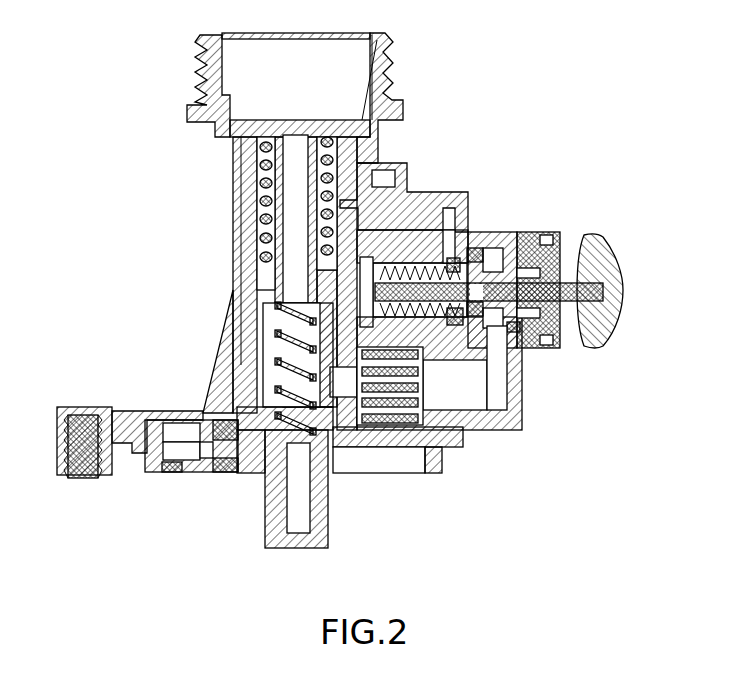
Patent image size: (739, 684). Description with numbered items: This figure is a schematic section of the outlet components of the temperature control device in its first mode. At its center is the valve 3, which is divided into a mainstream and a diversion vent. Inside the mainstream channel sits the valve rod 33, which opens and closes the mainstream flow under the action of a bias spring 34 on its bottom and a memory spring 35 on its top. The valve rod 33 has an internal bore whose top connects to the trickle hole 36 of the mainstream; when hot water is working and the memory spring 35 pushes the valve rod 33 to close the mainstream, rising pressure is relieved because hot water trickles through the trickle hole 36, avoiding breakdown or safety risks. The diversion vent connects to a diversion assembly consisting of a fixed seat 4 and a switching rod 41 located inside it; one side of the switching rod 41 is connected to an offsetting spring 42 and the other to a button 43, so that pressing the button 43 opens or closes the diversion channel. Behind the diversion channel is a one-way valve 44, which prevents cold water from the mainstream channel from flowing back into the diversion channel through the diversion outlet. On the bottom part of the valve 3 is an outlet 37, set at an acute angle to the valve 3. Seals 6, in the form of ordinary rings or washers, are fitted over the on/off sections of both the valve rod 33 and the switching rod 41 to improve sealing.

The valve 3 is at (388, 102).
The fixed seat 4 is at (422, 192).
The seals 6 is at (232, 262).
The valve rod 33 is at (262, 290).
The bias spring 34 is at (240, 368).
The memory spring 35 is at (245, 195).
The trickle hole 36 is at (230, 150).
The outlet 37 is at (200, 450).
The switching rod 41 is at (537, 232).
The offsetting spring 42 is at (476, 371).
The button 43 is at (616, 258).
The one-way valve 44 is at (487, 437).